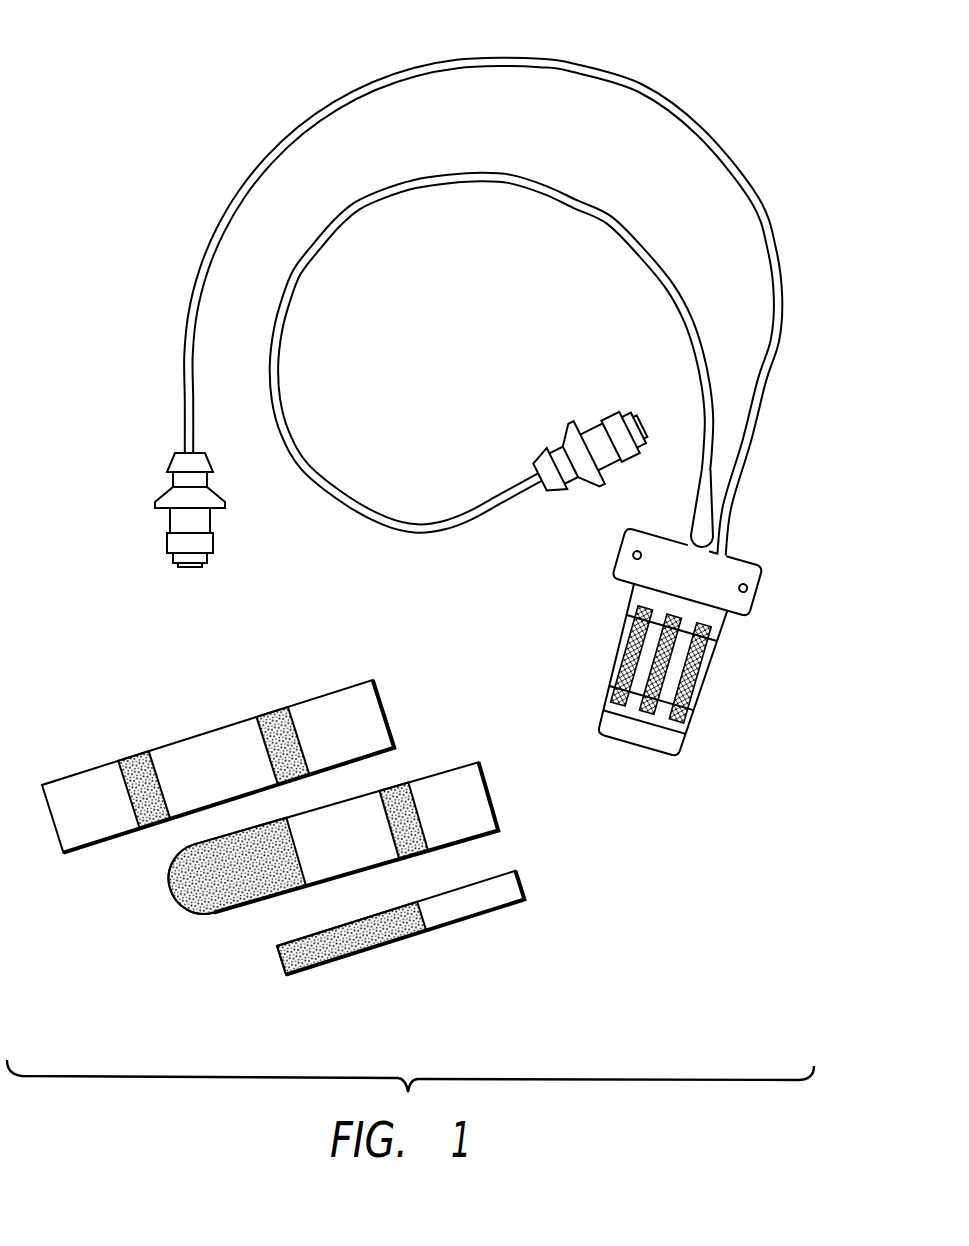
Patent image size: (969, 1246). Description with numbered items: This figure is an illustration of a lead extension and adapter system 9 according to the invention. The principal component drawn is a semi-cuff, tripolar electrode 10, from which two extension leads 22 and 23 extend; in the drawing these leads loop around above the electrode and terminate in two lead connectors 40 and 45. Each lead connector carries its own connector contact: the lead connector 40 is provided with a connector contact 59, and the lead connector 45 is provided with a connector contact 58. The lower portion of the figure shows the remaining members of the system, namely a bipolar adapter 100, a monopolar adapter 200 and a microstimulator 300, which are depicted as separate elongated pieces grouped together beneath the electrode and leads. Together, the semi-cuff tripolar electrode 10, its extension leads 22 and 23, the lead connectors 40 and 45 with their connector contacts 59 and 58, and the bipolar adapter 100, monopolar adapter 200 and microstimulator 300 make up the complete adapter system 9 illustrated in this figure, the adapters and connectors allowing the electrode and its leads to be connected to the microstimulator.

The adapter system 9 is at (226, 121).
The semi-cuff, tripolar electrode 10 is at (740, 674).
The extension lead 22 is at (356, 221).
The extension lead 23 is at (217, 226).
The lead connector 40 is at (604, 428).
The lead connector 45 is at (154, 555).
The connector contact 58 is at (210, 610).
The connector contact 59 is at (640, 426).
The bipolar adapter 100 is at (112, 739).
The monopolar adapter 200 is at (164, 924).
The microstimulator 300 is at (466, 941).